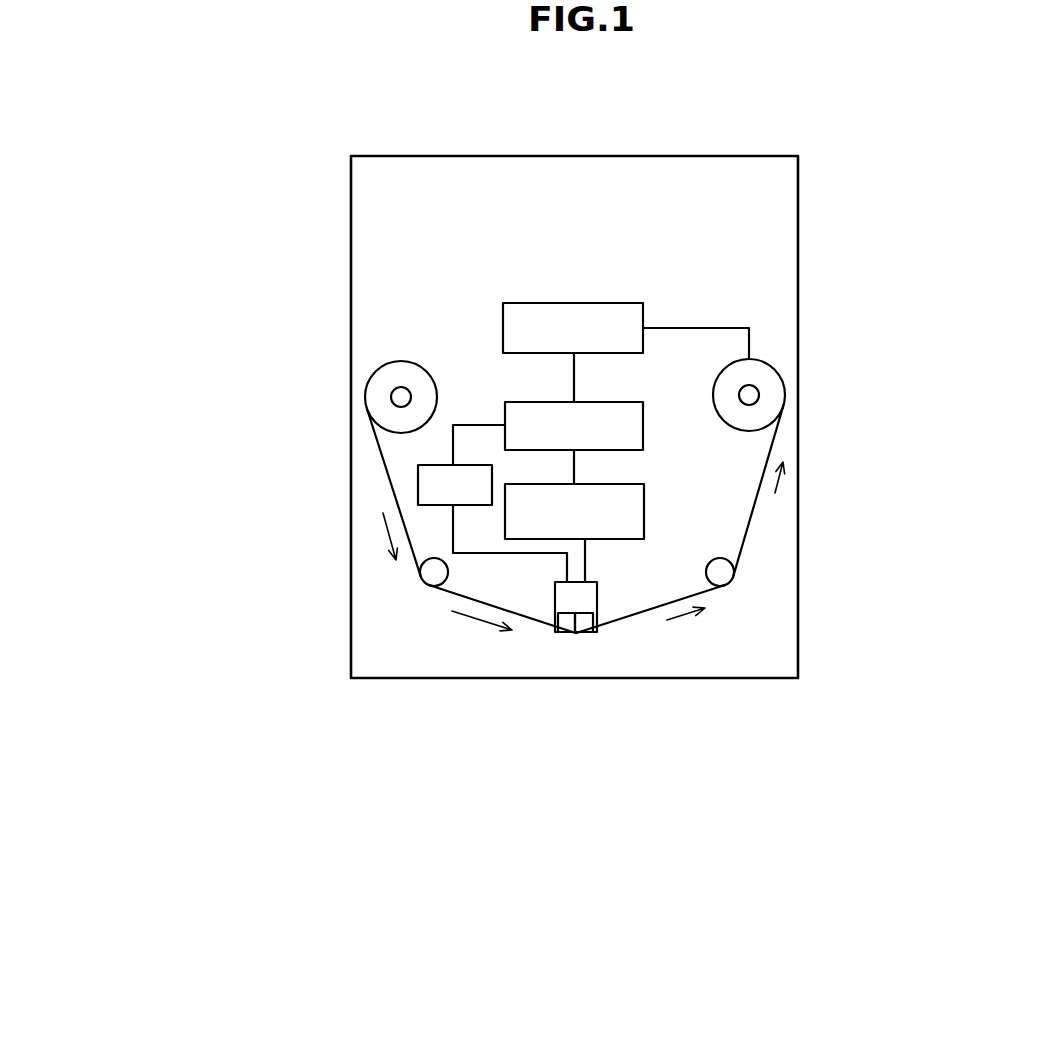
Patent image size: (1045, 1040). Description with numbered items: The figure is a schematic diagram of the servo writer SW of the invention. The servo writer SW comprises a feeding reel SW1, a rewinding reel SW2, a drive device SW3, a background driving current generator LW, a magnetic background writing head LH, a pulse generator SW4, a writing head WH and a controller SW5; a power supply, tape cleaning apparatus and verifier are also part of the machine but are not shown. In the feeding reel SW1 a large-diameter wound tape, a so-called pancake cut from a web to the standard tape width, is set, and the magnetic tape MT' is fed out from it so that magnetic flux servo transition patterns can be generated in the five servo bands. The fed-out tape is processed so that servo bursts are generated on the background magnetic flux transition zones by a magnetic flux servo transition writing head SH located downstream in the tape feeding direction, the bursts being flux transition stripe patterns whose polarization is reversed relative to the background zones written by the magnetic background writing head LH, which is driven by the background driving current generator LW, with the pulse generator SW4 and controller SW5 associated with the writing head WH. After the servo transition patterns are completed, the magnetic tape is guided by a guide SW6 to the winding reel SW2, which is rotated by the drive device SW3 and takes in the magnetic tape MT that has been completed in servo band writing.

The servo writer SW is at (640, 157).
The feeding reel SW1 is at (403, 362).
The rewinding reel SW2 is at (776, 368).
The drive device SW3 is at (595, 303).
The pulse generator SW4 is at (637, 530).
The controller SW5 is at (645, 428).
The guide SW6 is at (427, 590).
The background driving current generator LW is at (425, 466).
The magnetic tape MT' is at (412, 520).
The magnetic tape MT is at (724, 519).
The writing head WH is at (597, 606).
The magnetic background writing head LH is at (565, 633).
The magnetic flux servo transition writing head SH is at (585, 633).